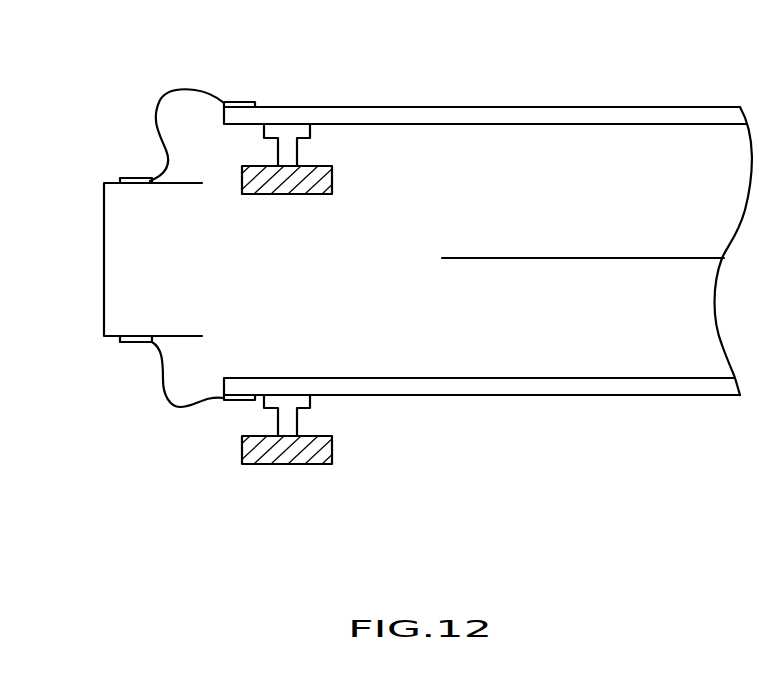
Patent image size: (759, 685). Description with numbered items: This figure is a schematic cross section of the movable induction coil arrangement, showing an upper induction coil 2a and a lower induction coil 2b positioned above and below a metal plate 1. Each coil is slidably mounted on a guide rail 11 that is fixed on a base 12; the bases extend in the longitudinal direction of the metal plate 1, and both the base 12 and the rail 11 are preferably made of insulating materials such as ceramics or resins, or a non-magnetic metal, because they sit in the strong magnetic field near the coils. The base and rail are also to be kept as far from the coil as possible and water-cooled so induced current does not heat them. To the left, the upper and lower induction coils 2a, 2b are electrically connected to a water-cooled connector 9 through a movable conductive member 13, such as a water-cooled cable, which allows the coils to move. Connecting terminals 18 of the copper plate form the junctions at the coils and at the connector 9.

The metal plate 1 is at (503, 258).
The upper induction coil 2a is at (432, 115).
The lower induction coil 2b is at (480, 388).
The water-cooled connector 9 is at (104, 230).
The guide rail 11 is at (290, 150).
The base 12 is at (315, 182).
The movable conductive member 13 is at (173, 90).
The connecting terminal 18 is at (240, 102).